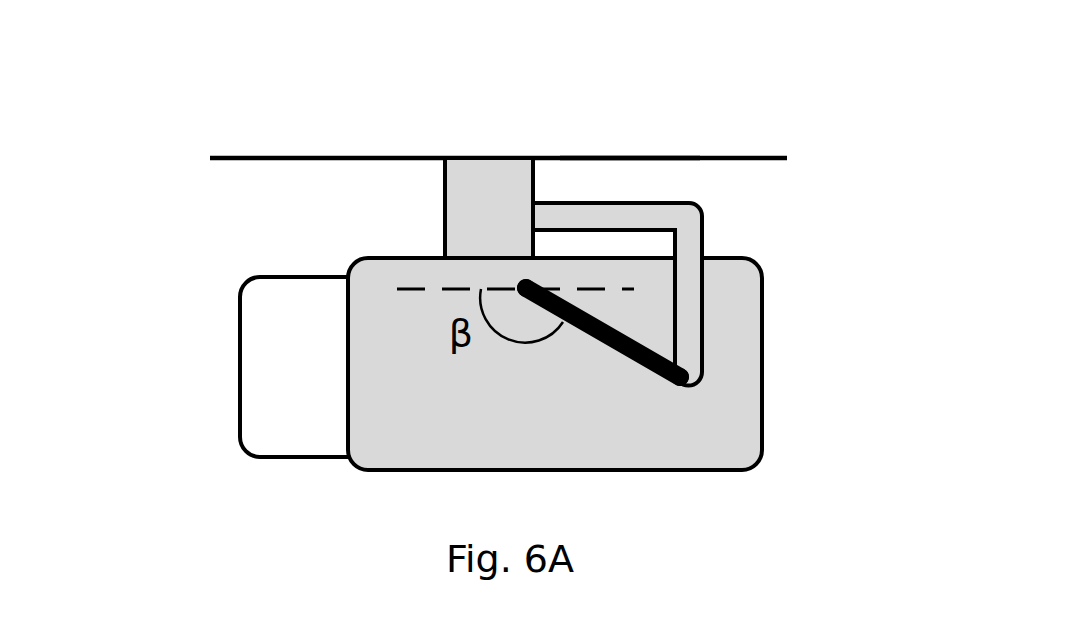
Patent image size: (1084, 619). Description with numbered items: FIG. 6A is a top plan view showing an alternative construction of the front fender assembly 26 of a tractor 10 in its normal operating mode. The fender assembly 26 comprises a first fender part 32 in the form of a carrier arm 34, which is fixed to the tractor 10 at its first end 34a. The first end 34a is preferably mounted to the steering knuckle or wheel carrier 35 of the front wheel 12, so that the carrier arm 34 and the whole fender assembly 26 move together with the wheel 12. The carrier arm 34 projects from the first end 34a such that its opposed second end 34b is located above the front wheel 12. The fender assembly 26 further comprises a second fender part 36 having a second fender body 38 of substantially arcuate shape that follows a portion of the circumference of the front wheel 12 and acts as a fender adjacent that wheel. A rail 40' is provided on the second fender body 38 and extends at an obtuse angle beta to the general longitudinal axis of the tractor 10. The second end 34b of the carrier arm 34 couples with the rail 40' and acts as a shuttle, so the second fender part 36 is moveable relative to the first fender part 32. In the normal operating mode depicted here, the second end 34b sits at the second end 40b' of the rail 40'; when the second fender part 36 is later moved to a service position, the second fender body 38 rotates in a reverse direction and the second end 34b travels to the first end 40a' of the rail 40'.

The tractor 10 is at (673, 157).
The front wheel 12 is at (280, 382).
The front fender assembly 26 is at (172, 252).
The first fender part 32 is at (630, 143).
The carrier arm 34 is at (696, 216).
The first end of the carrier arm 34a is at (538, 200).
The second end of the carrier arm 34b is at (722, 352).
The steering knuckle or wheel carrier 35 is at (468, 182).
The second fender part 36 is at (812, 417).
The second fender body 38 is at (653, 437).
The rail 40' is at (607, 434).
The first end of the rail 40a' is at (388, 258).
The second end of the rail 40b' is at (803, 361).